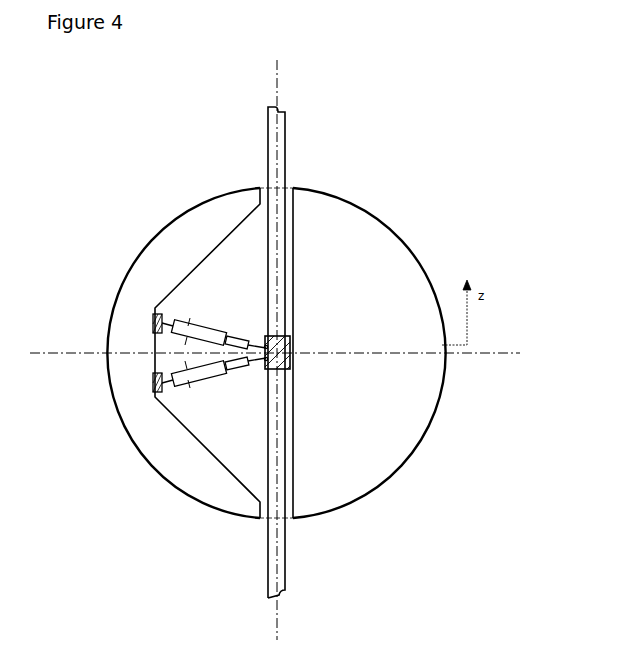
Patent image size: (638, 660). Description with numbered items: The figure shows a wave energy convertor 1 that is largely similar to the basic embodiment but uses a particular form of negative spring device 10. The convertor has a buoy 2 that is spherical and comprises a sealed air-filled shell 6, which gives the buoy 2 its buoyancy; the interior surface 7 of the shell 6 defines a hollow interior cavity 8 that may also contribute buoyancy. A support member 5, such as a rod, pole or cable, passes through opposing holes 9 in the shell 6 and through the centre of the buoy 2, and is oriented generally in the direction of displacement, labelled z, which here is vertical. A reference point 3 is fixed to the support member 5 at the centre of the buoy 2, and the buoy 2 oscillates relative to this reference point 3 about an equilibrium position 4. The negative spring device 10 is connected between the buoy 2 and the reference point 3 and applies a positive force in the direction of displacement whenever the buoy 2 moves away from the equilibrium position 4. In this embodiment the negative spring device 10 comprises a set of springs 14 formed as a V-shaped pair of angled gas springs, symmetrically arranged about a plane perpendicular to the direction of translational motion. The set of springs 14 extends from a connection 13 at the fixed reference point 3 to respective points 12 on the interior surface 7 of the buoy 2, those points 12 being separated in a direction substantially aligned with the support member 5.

The wave energy convertor 1 is at (98, 203).
The buoy 2 is at (401, 243).
The reference point 3 is at (287, 367).
The equilibrium position 4 is at (507, 360).
The support member 5 is at (284, 146).
The shell 6 is at (193, 228).
The interior surface 7 is at (239, 224).
The hollow interior cavity 8 is at (225, 263).
The holes 9 is at (294, 190).
The negative spring device 10 is at (190, 392).
The points 12 is at (162, 310).
The connection 13 is at (267, 362).
The set of springs 14 is at (180, 373).